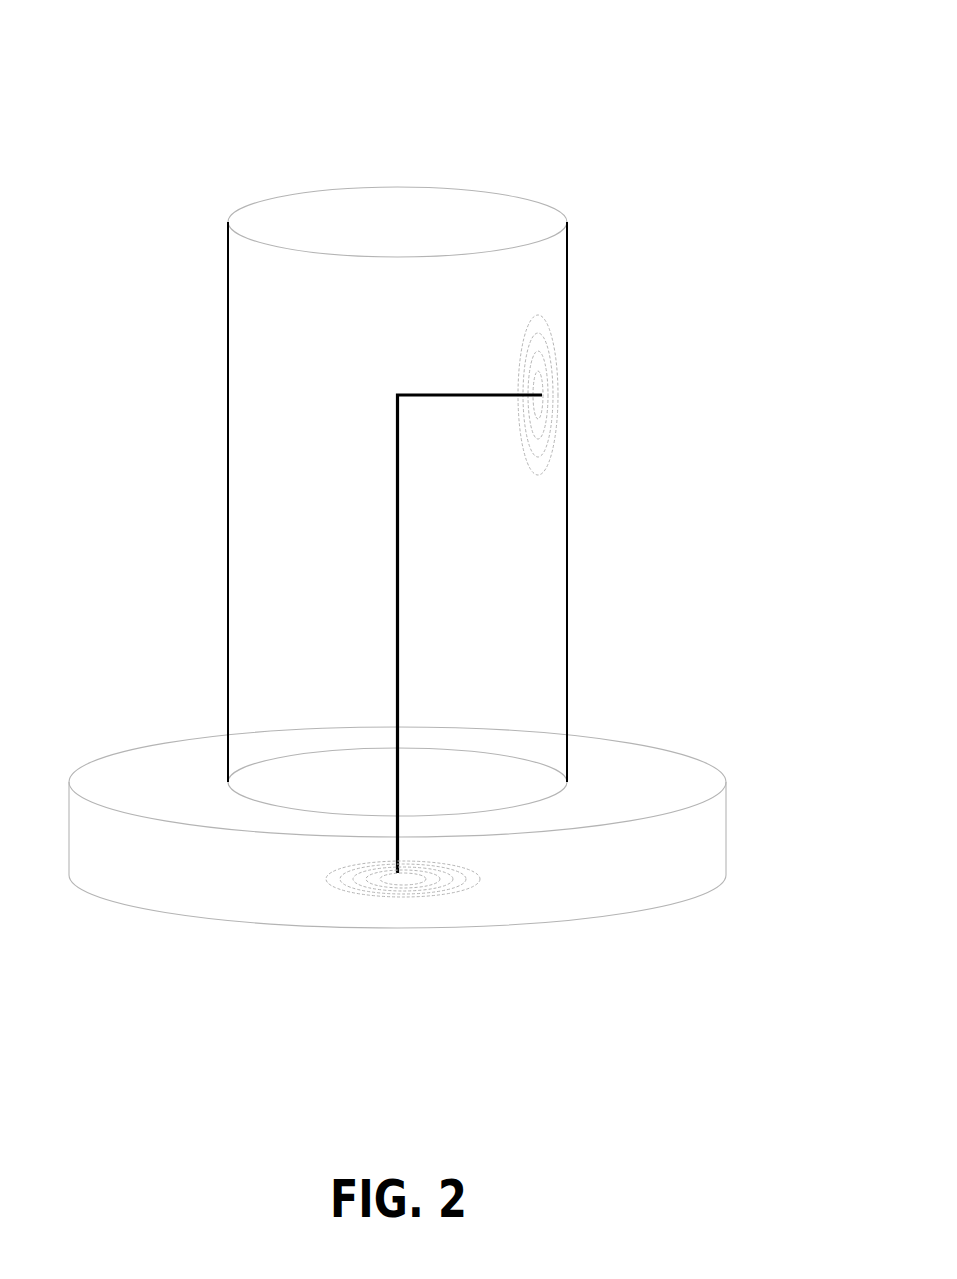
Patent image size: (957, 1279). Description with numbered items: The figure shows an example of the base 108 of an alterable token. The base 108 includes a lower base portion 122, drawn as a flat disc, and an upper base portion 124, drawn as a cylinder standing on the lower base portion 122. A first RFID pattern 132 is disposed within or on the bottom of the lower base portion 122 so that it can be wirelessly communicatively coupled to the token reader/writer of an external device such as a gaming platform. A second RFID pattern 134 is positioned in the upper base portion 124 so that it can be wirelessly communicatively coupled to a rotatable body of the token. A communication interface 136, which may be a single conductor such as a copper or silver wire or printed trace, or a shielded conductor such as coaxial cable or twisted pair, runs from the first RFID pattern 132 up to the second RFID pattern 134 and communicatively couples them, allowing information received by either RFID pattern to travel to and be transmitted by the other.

The base 108 is at (461, 62).
The lower base portion 122 is at (725, 822).
The upper base portion 124 is at (567, 640).
The first RFID pattern 132 is at (487, 878).
The second RFID pattern 134 is at (557, 390).
The communication interface 136 is at (398, 617).